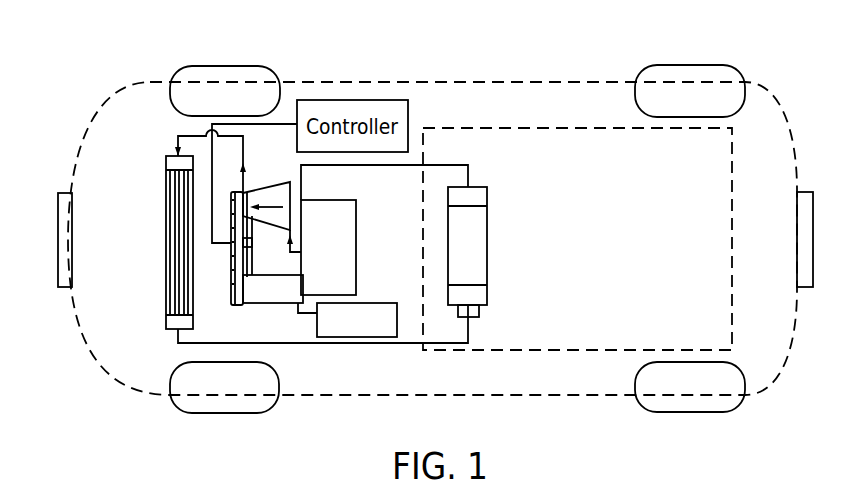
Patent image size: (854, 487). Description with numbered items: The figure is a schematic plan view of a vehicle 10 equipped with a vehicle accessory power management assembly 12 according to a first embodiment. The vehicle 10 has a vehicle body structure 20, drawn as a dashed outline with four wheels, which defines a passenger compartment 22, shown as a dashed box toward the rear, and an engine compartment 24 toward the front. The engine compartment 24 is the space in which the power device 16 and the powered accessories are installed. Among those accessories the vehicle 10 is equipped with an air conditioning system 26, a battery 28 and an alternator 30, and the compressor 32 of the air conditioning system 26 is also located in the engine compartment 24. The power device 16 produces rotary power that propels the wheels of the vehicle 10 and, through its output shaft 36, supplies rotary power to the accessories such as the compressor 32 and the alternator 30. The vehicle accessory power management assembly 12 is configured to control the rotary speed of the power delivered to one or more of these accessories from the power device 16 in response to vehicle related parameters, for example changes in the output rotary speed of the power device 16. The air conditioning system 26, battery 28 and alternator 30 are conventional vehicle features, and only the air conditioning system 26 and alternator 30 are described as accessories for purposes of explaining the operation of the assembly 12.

The vehicle 10 is at (435, 211).
The vehicle accessory power management assembly 12 is at (224, 256).
The power device 16 is at (325, 223).
The vehicle body structure 20 is at (316, 82).
The passenger compartment 22 is at (543, 126).
The engine compartment 24 is at (282, 325).
The air conditioning system 26 is at (496, 268).
The battery 28 is at (382, 303).
The alternator 30 is at (270, 304).
The compressor 32 is at (270, 198).
The output shaft 36 is at (252, 243).